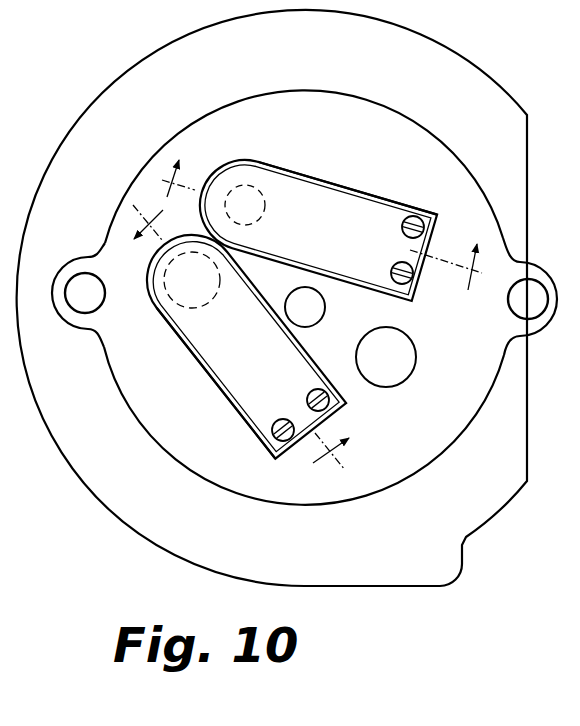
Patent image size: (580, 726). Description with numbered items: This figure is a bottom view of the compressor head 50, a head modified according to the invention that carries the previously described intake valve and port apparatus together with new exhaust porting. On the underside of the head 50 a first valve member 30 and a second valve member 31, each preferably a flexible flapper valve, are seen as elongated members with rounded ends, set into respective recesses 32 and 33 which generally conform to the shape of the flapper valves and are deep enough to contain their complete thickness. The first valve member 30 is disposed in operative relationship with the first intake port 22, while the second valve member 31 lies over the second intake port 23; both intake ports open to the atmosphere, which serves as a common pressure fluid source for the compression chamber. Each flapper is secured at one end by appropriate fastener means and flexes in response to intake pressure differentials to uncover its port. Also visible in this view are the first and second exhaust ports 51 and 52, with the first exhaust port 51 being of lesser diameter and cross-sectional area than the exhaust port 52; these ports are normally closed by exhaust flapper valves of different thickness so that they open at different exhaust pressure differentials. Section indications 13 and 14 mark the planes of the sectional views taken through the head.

The compressor head 50 is at (86, 559).
The first exhaust port 51 is at (320, 304).
The second exhaust port 52 is at (405, 368).
The first valve member 30 is at (352, 205).
The second valve member 31 is at (238, 387).
The recess 32 is at (303, 175).
The recess 33 is at (193, 363).
The first intake port 22 is at (265, 205).
The second intake port 23 is at (207, 303).
The section line 13- 13 is at (329, 219).
The section line 14- 14 is at (233, 351).